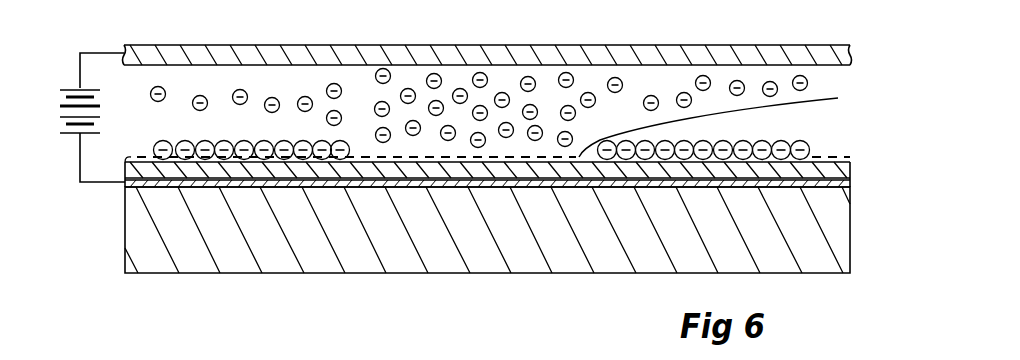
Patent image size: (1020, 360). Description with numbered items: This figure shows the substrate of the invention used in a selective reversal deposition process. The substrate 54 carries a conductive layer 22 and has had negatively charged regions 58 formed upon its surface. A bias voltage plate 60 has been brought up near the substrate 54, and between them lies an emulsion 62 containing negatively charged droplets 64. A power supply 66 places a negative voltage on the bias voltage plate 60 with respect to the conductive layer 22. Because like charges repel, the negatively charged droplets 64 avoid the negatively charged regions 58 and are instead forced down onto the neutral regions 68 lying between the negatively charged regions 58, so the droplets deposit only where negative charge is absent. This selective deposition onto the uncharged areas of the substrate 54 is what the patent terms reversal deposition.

The conductive layer 22 is at (127, 190).
The substrate 54 is at (228, 291).
The negatively charged regions 58 is at (350, 311).
The bias voltage plate 60 is at (473, 53).
The emulsion 62 is at (278, 77).
The negatively charged droplets 64 is at (528, 76).
The power supply 66 is at (63, 106).
The neutral regions 68 is at (215, 162).